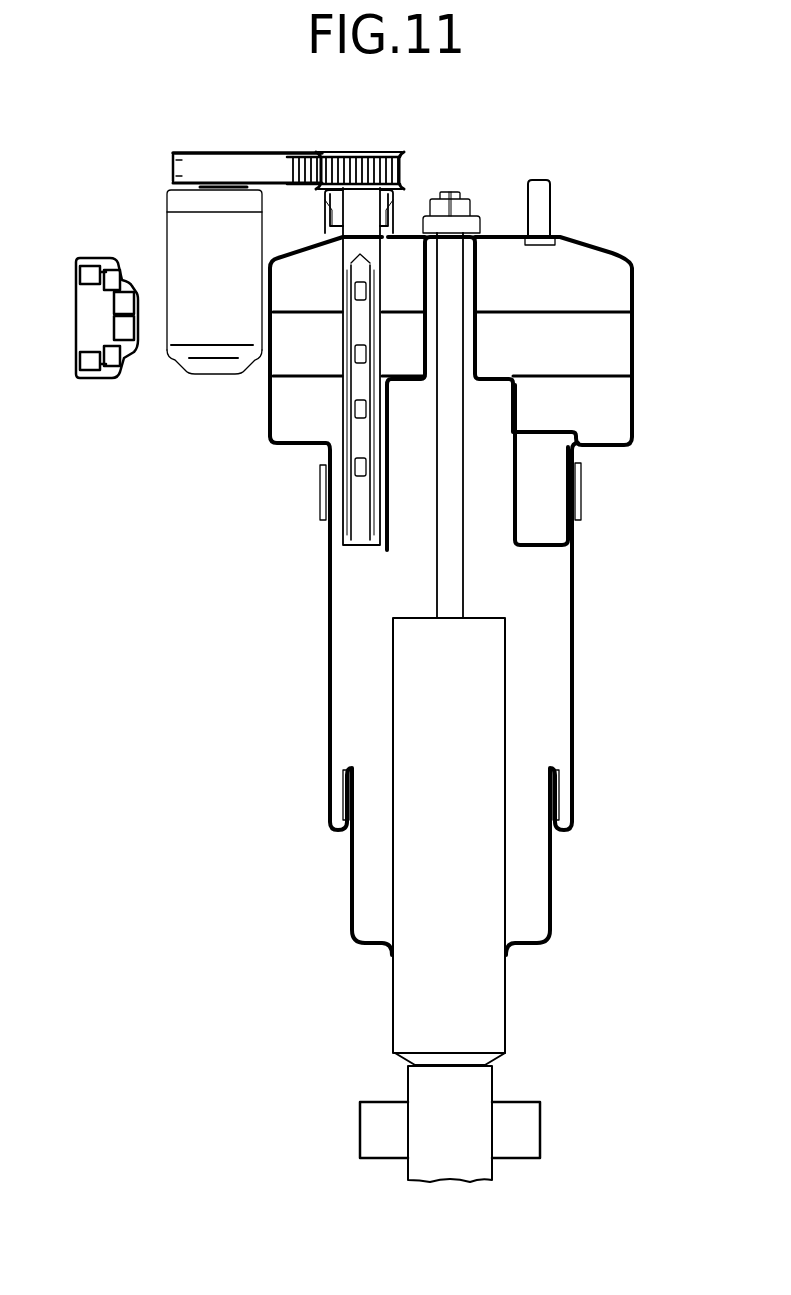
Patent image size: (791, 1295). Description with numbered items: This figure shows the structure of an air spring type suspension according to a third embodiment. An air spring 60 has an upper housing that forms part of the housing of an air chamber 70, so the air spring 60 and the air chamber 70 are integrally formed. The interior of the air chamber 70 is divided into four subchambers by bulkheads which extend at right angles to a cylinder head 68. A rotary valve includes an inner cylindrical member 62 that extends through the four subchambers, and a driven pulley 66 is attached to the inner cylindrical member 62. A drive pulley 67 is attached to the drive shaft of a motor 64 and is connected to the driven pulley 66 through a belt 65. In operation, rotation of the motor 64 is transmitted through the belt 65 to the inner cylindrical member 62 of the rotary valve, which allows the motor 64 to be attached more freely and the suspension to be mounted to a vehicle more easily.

The air spring 60 is at (576, 658).
The inner cylindrical member 62 is at (353, 437).
The motor 64 is at (178, 337).
The belt 65 is at (187, 170).
The driven pulley 66 is at (387, 153).
The drive pulley 67 is at (247, 153).
The cylinder head 68 is at (442, 568).
The air chamber 70 is at (636, 432).